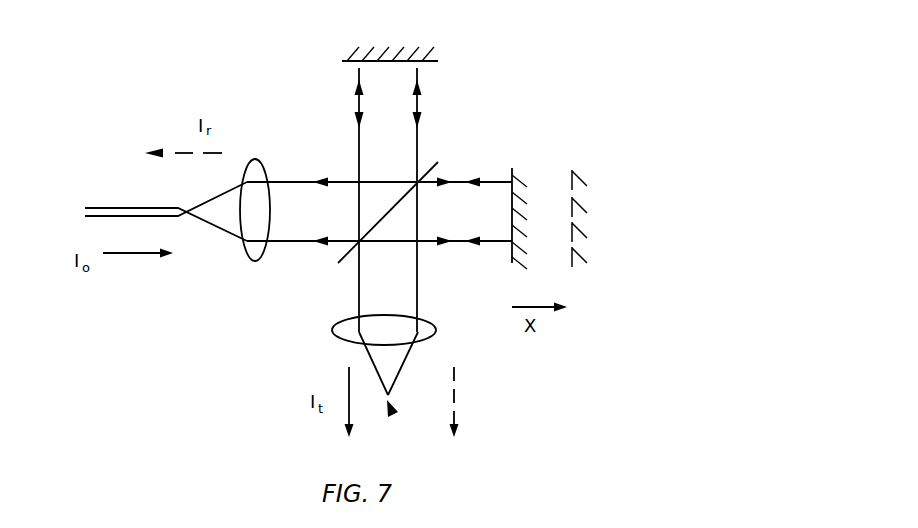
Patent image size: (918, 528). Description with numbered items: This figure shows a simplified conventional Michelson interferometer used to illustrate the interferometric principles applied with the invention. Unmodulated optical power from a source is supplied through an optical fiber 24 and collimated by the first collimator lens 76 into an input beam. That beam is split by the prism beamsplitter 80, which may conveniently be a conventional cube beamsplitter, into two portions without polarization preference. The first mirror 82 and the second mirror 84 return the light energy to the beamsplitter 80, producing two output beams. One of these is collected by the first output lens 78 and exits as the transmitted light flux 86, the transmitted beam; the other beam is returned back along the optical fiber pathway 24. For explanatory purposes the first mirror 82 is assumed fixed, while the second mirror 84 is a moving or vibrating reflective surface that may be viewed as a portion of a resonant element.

The fiber 24 is at (166, 207).
The first collimator lens 76 is at (243, 254).
The first output lens 78 is at (343, 318).
The prism beamsplitter 80 is at (433, 166).
The first mirror 82 is at (433, 63).
The second mirror 84 is at (512, 168).
The transmitted light flux 86 is at (400, 418).